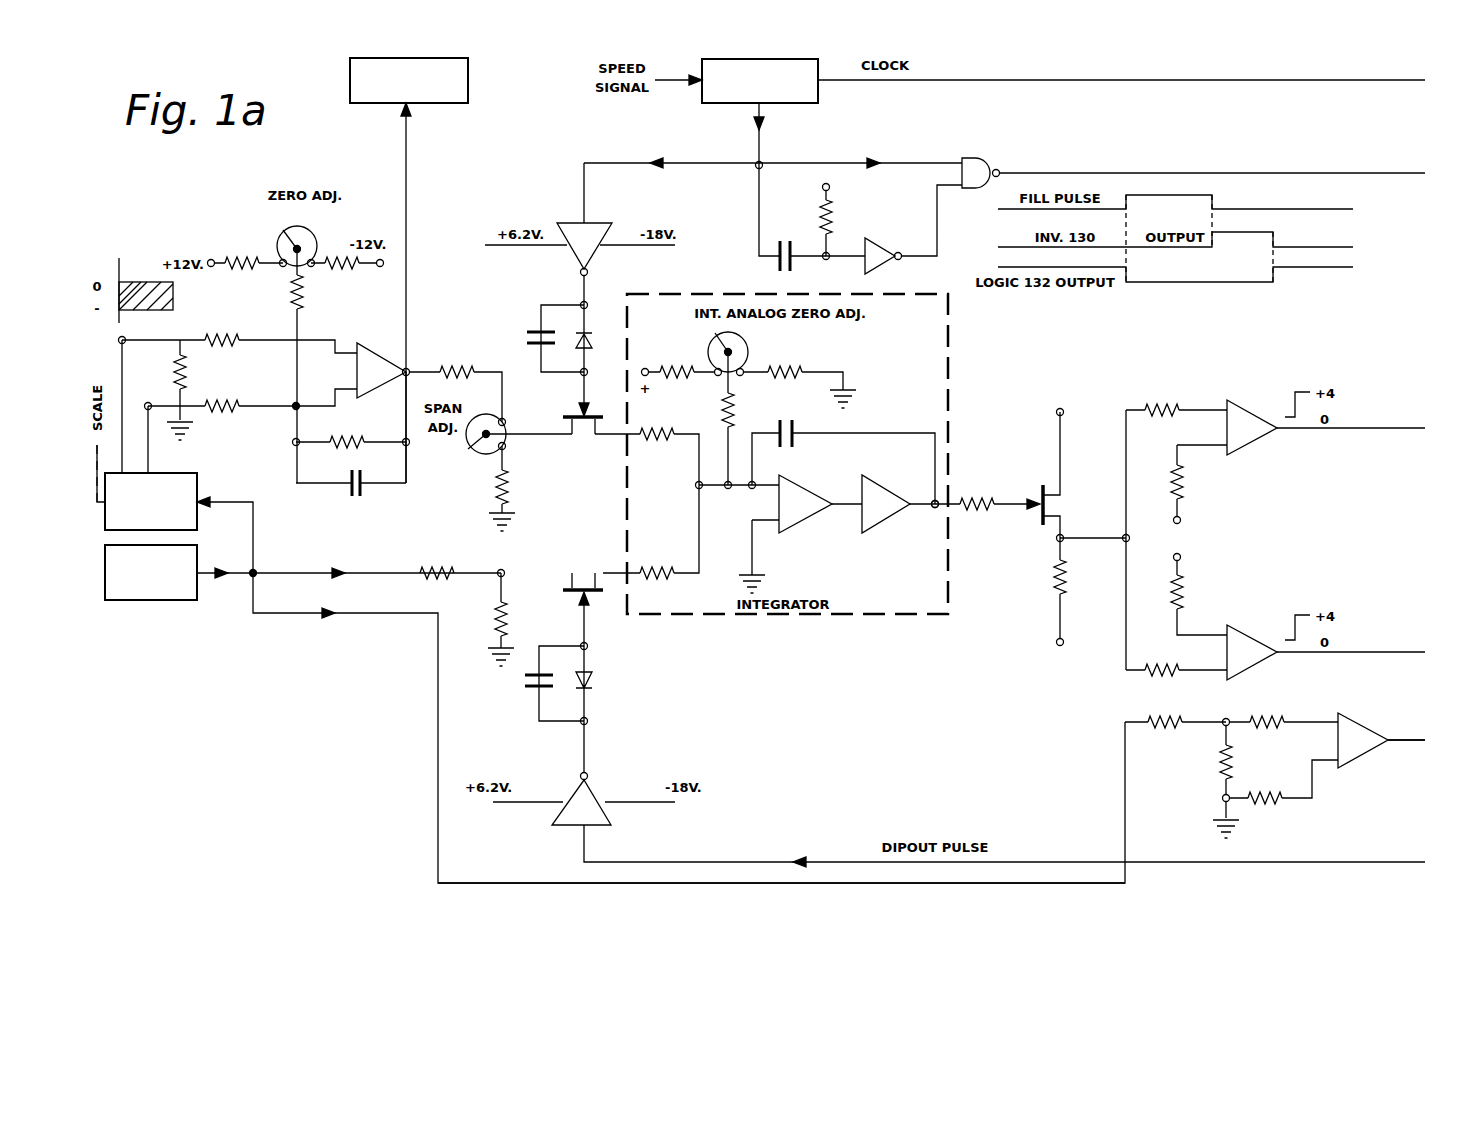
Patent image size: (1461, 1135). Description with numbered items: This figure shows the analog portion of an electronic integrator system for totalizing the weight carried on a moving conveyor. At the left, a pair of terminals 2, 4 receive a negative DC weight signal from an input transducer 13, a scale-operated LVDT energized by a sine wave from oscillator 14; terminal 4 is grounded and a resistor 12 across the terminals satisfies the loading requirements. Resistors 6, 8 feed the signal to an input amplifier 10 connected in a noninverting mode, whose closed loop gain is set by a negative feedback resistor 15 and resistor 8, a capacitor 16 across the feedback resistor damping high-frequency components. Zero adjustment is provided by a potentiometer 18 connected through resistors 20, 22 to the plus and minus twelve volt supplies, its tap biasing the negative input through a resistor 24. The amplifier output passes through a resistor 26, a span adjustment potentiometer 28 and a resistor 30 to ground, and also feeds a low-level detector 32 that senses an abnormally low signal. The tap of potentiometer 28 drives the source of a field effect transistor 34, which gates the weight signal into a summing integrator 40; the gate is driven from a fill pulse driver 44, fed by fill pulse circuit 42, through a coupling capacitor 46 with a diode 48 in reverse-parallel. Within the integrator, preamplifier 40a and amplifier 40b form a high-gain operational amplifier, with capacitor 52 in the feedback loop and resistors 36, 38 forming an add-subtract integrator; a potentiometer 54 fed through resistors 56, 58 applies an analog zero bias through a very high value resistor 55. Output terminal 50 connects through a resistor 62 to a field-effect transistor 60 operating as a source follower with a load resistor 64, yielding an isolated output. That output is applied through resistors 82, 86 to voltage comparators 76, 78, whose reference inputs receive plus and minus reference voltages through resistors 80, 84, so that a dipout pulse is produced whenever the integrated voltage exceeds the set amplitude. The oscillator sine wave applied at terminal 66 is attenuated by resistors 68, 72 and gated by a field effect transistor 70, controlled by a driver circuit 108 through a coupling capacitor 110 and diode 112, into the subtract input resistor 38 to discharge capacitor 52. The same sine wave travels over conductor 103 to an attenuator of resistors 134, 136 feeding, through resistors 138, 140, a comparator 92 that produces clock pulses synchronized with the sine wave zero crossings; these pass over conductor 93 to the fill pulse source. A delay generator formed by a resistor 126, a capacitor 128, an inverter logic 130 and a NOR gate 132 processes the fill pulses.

The terminal 2 is at (118, 344).
The terminal 4 is at (147, 401).
The resistor 6 is at (222, 334).
The resistor 8 is at (226, 412).
The input amplifier 10 is at (380, 352).
The resistor 12 is at (186, 375).
The input transducer 13 is at (196, 484).
The oscillator 14 is at (176, 602).
The negative feedback resistor 15 is at (352, 434).
The capacitor 16 is at (360, 497).
The potentiometer 18 is at (312, 236).
The resistor 20 is at (246, 256).
The resistor 22 is at (352, 268).
The resistor 24 is at (290, 296).
The resistor 26 is at (470, 364).
The span adjustment potentiometer 28 is at (474, 456).
The resistor 30 is at (512, 490).
The low-level detector 32 is at (446, 108).
The field effect transistor 34 is at (580, 415).
The resistor 36 is at (652, 442).
The resistor 38 is at (653, 568).
The summing integrator 40 is at (934, 592).
The preamplifier 40a is at (800, 524).
The amplifier 40b is at (888, 524).
The fill pulse circuit 42 is at (740, 104).
The fill pulse driver 44 is at (572, 220).
The coupling capacitor 46 is at (524, 333).
The diode 48 is at (594, 336).
The output terminal 50 is at (932, 498).
The capacitor 52 is at (796, 447).
The potentiometer 54 is at (744, 344).
The resistor 55 is at (720, 410).
The resistor 56 is at (680, 362).
The resistor 58 is at (796, 360).
The field-effect transistor 60 is at (1040, 480).
The resistor 62 is at (972, 512).
The load resistor 64 is at (1052, 580).
The terminal 66 is at (257, 568).
The resistor 68 is at (440, 566).
The field effect transistor 70 is at (588, 574).
The resistor 72 is at (494, 620).
The voltage comparator 76 is at (1252, 406).
The voltage comparator 78 is at (1254, 636).
The resistor 80 is at (1186, 490).
The resistor 82 is at (1168, 402).
The resistor 84 is at (1188, 598).
The resistor 86 is at (1164, 664).
The comparator 92 is at (1370, 726).
The conductor 93 is at (1402, 744).
The conductor 103 is at (740, 885).
The driver circuit 108 is at (574, 818).
The coupling capacitor 110 is at (526, 680).
The diode 112 is at (594, 680).
The resistor 126 is at (834, 220).
The capacitor 128 is at (800, 222).
The inverter logic 130 is at (886, 244).
The NOR gate 132 is at (986, 166).
The resistor 134 is at (1160, 716).
The resistor 136 is at (1218, 762).
The resistor 138 is at (1268, 716).
The resistor 140 is at (1264, 792).